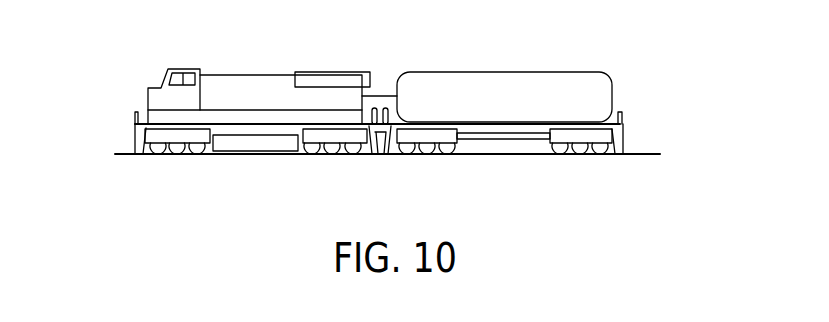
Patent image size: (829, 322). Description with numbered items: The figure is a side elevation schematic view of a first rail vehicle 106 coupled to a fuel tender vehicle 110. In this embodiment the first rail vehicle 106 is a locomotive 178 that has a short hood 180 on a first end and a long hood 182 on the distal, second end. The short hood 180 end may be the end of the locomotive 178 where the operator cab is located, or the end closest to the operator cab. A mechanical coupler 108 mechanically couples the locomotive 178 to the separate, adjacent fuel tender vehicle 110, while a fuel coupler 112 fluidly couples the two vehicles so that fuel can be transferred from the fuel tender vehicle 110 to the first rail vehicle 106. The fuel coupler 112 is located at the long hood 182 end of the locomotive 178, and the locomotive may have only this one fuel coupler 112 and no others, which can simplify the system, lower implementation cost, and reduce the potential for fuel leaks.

The first rail vehicle 106 is at (188, 51).
The mechanical coupler 108 is at (381, 135).
The fuel tender vehicle 110 is at (515, 72).
The fuel coupler 112 is at (376, 95).
The locomotive 178 is at (262, 75).
The short hood 180 is at (148, 100).
The long hood 182 is at (332, 72).